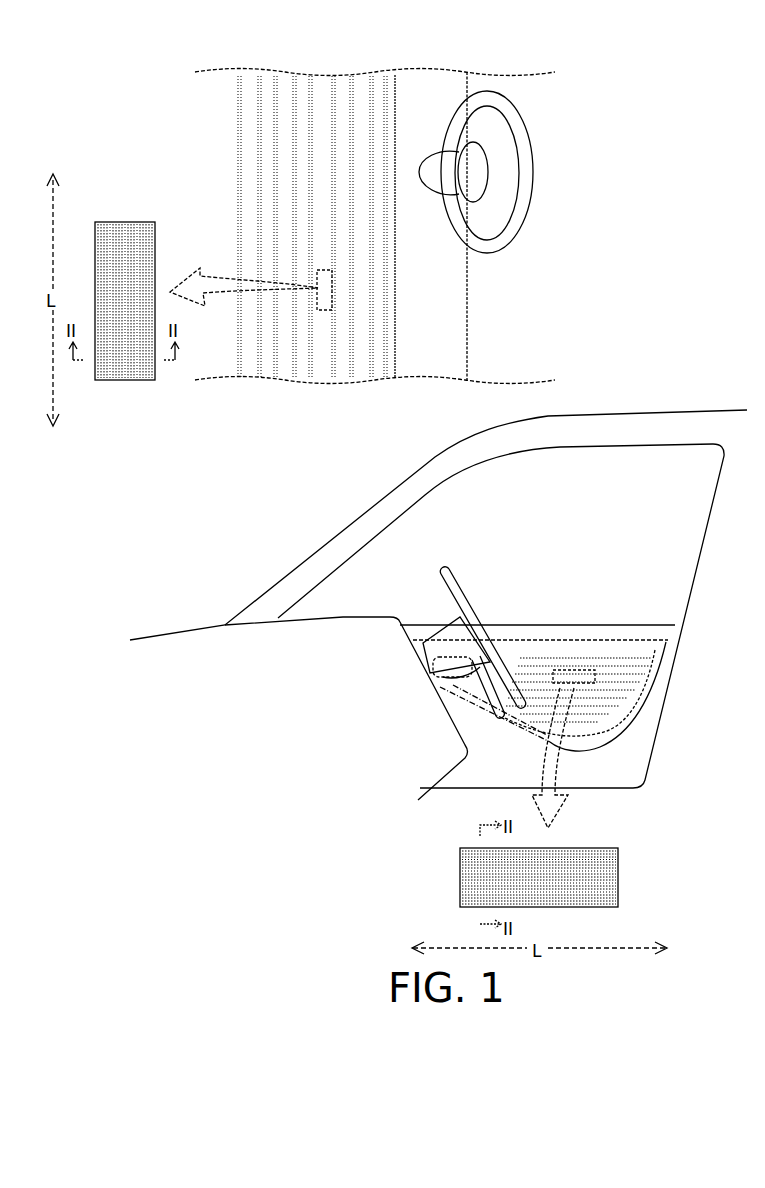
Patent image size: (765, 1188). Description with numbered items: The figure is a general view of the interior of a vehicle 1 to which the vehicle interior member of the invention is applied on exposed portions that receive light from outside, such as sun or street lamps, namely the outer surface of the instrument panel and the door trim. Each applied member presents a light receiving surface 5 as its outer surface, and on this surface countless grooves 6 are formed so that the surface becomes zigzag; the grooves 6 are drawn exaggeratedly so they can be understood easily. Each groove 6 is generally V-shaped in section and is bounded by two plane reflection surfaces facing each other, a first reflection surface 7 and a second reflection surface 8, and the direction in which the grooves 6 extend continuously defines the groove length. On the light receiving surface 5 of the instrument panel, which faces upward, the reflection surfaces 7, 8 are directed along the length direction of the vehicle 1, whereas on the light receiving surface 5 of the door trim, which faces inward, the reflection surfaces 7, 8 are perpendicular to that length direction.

The vehicle 1 is at (273, 476).
The light receiving surface 5 is at (348, 76).
The grooves 6 is at (148, 258).
The first reflection surface 7 is at (133, 370).
The second reflection surface 8 is at (124, 240).